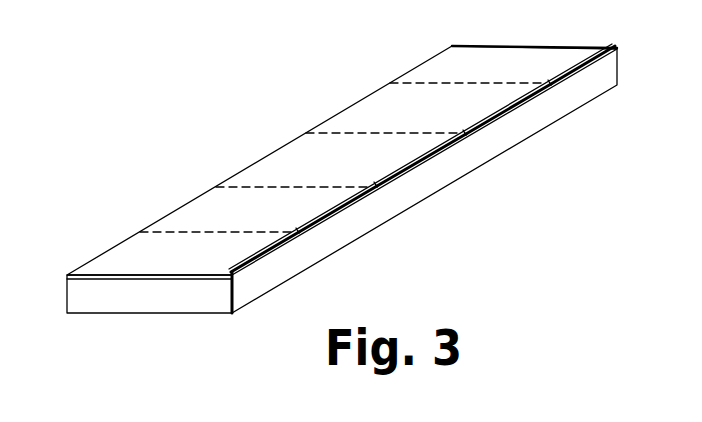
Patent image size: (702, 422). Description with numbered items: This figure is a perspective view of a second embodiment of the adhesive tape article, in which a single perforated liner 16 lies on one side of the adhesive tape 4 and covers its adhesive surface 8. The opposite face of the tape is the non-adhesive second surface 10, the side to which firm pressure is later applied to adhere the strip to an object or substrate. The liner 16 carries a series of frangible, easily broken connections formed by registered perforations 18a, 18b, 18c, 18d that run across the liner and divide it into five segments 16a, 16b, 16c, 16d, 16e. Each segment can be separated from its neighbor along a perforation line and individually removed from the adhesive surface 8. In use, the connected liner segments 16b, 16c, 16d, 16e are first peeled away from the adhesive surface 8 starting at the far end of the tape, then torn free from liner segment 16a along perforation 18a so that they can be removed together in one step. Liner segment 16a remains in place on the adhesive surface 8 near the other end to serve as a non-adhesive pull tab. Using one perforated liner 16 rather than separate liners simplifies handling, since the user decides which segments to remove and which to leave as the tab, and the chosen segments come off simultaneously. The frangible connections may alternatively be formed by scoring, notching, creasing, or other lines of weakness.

The adhesive tape 4 is at (260, 312).
The adhesive surface 8 is at (93, 279).
The non-adhesive second surface 10 is at (143, 313).
The perforated liner 16 is at (273, 146).
The liner segment 16a is at (232, 260).
The liner segment 16b is at (303, 216).
The liner segment 16c is at (377, 163).
The liner segment 16d is at (467, 112).
The liner segment 16e is at (548, 63).
The perforation 18a is at (177, 233).
The perforation 18b is at (247, 187).
The perforation 18c is at (348, 133).
The perforation 18d is at (432, 83).